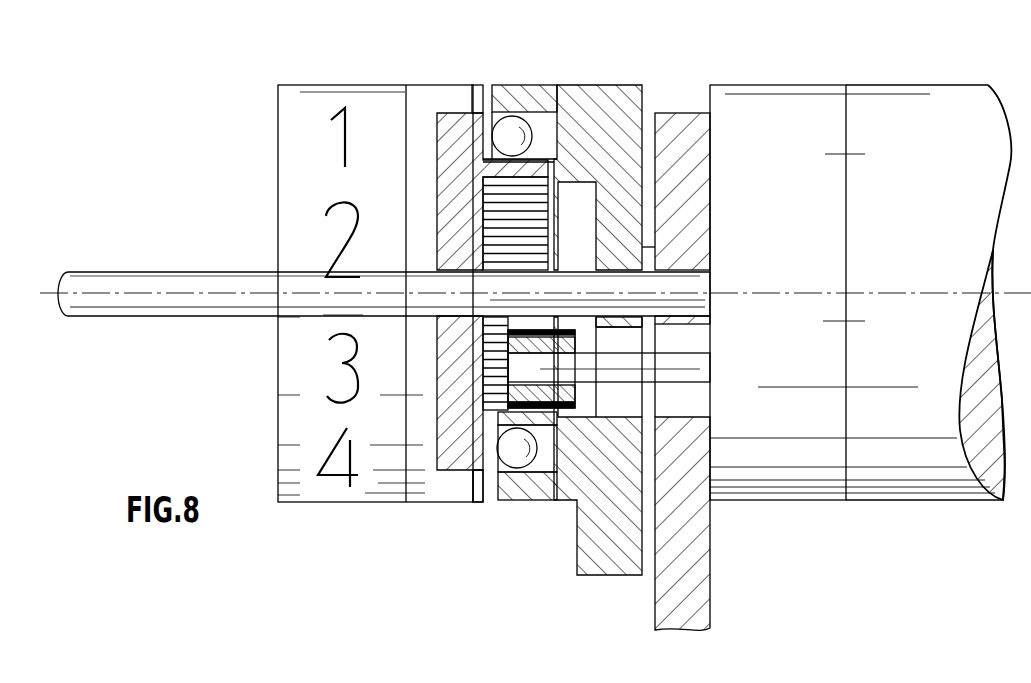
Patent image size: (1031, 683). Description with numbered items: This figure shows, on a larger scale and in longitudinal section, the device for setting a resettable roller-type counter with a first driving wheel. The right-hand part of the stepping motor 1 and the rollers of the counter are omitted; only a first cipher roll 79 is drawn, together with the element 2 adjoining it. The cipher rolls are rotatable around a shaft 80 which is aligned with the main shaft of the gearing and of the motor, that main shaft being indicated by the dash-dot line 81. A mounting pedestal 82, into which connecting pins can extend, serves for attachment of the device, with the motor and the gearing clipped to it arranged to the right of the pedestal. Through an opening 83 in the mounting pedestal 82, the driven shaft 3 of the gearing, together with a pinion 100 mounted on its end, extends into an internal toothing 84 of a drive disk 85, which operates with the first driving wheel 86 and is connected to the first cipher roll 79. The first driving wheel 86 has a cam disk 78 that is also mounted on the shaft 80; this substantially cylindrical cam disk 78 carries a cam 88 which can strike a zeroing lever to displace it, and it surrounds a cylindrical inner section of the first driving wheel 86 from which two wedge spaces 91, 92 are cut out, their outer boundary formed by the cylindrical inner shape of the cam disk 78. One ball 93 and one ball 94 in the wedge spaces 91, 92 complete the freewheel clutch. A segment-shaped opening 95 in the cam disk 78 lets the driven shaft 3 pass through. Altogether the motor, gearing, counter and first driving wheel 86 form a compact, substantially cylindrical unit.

The stepping motor 1 is at (920, 476).
The sleeve end portion 2 is at (831, 476).
The driven shaft 3 is at (702, 365).
The cam disk 78 is at (603, 112).
The first cipher roll 79 is at (330, 102).
The shaft 80 is at (163, 282).
The axis 81 is at (909, 292).
The mounting pedestal 82 is at (673, 122).
The opening 83 is at (703, 395).
The internal toothing 84 is at (512, 405).
The drive disk 85 is at (476, 95).
The first driving wheel 86 is at (515, 500).
The cam 88 is at (591, 552).
The wedge space 91 is at (538, 467).
The wedge space 92 is at (548, 125).
The ball 93 is at (522, 122).
The ball 94 is at (510, 457).
The segment-shaped opening 95 is at (640, 403).
The pinion 100 is at (457, 443).